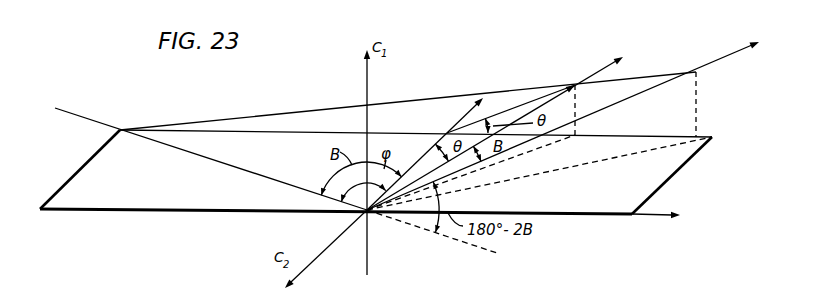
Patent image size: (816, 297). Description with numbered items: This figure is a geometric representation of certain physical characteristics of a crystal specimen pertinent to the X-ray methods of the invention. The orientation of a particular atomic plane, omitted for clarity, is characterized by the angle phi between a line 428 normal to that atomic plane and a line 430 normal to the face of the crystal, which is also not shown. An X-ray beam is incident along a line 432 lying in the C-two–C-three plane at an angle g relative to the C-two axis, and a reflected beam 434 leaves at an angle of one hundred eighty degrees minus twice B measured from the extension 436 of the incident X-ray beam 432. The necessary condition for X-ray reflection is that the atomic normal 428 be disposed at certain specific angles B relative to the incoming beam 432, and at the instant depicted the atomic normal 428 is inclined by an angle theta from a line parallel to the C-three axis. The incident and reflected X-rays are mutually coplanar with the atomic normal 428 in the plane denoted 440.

The line normal to the atomic plane 428 is at (592, 77).
The line normal to the crystal face 430 is at (462, 121).
The incident X-ray beam line 432 is at (210, 160).
The reflected beam 434 is at (721, 60).
The extension of incident X-ray beam 436 is at (415, 228).
The plane of incident and reflected X-rays and atomic normal 440 is at (300, 111).